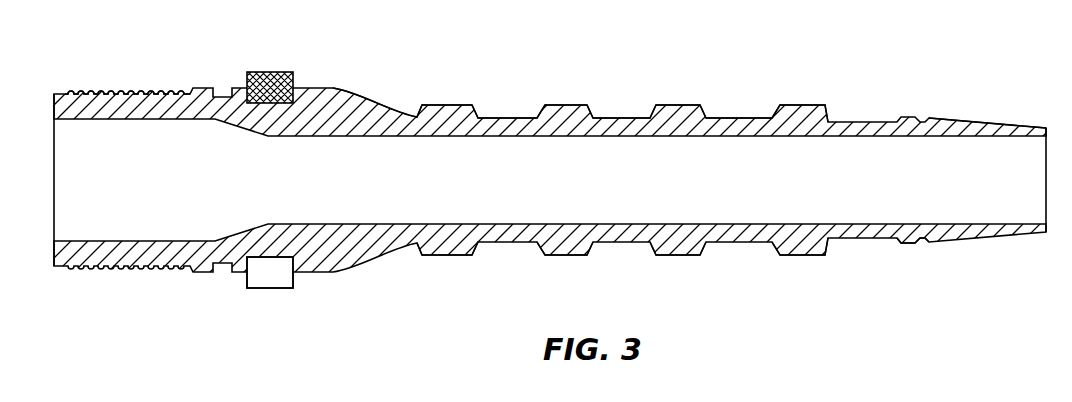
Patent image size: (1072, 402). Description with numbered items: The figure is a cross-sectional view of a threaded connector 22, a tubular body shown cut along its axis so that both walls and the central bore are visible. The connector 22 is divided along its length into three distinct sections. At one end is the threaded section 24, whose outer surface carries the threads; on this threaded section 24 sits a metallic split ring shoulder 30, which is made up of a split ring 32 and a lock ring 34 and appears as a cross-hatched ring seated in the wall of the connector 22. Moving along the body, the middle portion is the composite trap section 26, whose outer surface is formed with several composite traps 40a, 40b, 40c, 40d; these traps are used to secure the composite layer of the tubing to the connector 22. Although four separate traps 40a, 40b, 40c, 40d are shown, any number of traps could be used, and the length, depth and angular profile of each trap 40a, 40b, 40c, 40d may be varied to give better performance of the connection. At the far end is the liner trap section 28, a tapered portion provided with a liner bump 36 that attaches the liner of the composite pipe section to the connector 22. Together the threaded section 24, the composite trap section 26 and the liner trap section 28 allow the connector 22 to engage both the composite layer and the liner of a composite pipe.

The connector 22 is at (764, 40).
The threaded section 24 is at (90, 100).
The composite trap section 26 is at (612, 118).
The liner trap section 28 is at (963, 120).
The metallic split ring shoulder 30 is at (270, 72).
The split ring 32 is at (280, 290).
The lock ring 34 is at (262, 290).
The liner bump 36 is at (908, 240).
The composite trap 40a is at (730, 246).
The composite trap 40b is at (620, 246).
The composite trap 40c is at (508, 246).
The composite trap 40d is at (412, 246).